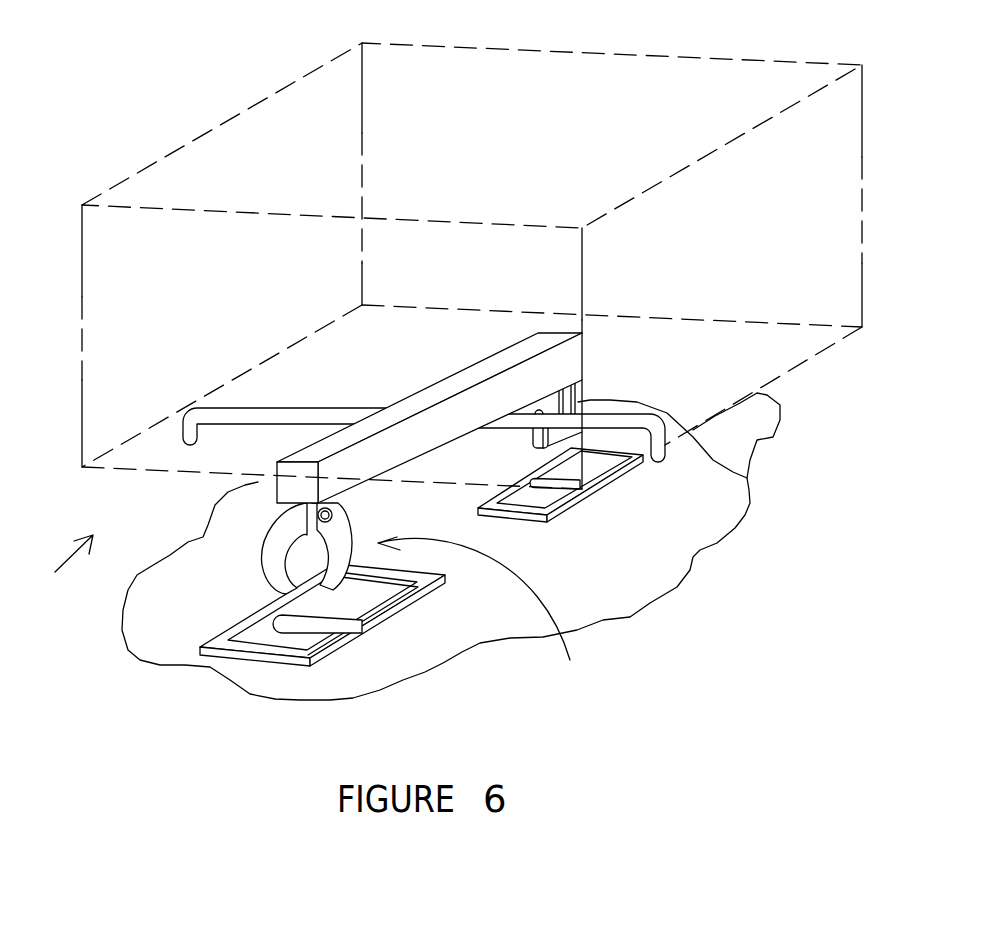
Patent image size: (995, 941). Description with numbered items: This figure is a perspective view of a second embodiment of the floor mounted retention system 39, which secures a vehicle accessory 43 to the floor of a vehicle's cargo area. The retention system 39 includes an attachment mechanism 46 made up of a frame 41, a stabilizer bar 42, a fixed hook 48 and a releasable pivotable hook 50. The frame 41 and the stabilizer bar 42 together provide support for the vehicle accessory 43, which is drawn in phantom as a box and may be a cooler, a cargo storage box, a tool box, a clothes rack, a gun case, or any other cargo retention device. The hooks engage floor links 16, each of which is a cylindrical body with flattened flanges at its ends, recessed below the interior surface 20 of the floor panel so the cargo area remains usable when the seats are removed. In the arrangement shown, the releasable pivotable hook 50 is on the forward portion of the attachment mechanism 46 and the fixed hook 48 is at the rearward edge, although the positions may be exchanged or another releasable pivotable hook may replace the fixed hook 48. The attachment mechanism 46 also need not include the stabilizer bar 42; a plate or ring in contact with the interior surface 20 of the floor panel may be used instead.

The floor link 16 is at (307, 628).
The interior surface 20 is at (383, 671).
The floor mounted retention system 39 is at (61, 577).
The frame 41 is at (405, 407).
The stabilizer bar 42 is at (230, 413).
The vehicle accessory 43 is at (220, 145).
The attachment mechanism 46 is at (483, 613).
The fixed hook 48 is at (745, 477).
The releasable pivotable hook 50 is at (268, 580).